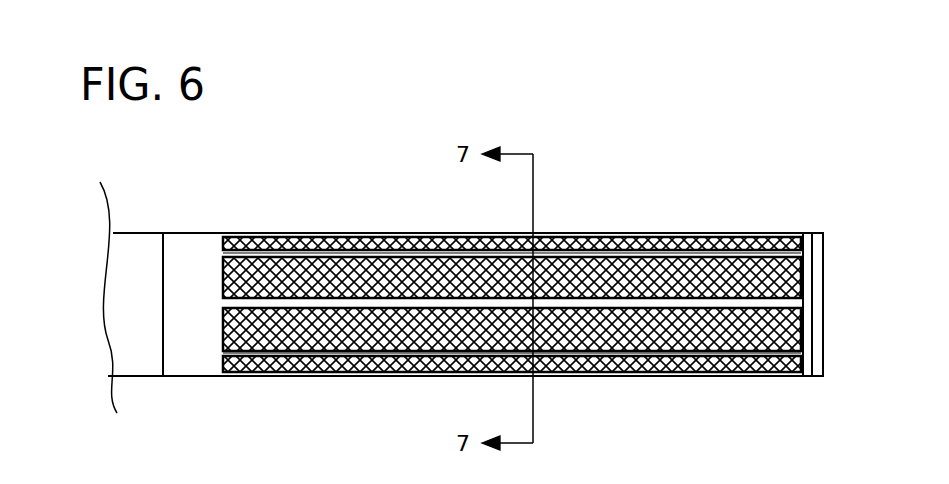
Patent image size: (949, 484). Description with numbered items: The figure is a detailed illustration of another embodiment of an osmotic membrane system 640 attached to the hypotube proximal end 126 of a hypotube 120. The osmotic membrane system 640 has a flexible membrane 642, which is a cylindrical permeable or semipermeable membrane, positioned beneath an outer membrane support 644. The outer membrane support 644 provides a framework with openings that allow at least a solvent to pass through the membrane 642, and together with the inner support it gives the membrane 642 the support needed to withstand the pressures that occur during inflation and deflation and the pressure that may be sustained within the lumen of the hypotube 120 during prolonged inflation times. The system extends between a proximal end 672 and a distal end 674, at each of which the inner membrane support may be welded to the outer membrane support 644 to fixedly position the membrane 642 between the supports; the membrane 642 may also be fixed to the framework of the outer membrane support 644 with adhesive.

The osmotic membrane system 640 is at (663, 118).
The hypotube proximal end 126 is at (130, 222).
The hypotube 120 is at (128, 368).
The distal end 674 is at (197, 233).
The outer membrane support 644 is at (622, 233).
The flexible membrane 642 is at (270, 268).
The proximal end 672 is at (815, 233).